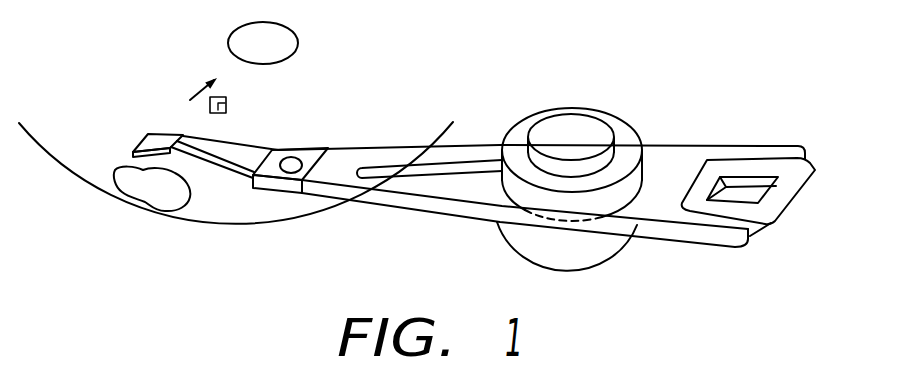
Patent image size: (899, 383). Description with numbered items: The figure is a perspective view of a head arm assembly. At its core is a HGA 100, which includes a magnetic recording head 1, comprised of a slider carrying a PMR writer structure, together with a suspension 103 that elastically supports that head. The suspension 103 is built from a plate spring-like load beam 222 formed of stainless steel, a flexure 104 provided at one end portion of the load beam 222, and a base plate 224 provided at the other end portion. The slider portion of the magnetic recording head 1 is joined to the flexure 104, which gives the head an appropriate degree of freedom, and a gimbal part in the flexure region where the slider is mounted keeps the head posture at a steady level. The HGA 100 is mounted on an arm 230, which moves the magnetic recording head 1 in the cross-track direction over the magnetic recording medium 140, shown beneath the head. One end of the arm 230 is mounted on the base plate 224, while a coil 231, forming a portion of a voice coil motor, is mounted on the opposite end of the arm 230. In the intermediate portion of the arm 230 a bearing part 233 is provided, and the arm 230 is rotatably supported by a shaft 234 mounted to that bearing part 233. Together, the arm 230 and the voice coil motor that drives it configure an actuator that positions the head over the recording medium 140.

The magnetic recording head 1 is at (145, 133).
The HGA 100 is at (239, 201).
The suspension 103 is at (434, 104).
The flexure 104 is at (135, 143).
The magnetic recording medium 140 is at (128, 209).
The load beam 222 is at (251, 157).
The base plate 224 is at (323, 148).
The arm 230 is at (393, 200).
The coil 231 is at (789, 210).
The bearing part 233 is at (525, 128).
The shaft 234 is at (575, 130).